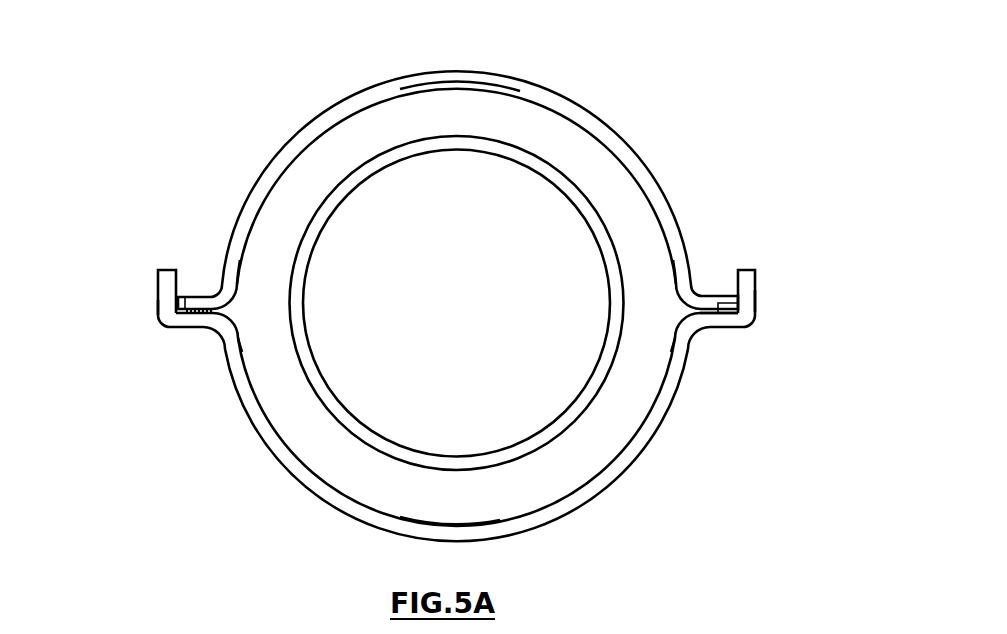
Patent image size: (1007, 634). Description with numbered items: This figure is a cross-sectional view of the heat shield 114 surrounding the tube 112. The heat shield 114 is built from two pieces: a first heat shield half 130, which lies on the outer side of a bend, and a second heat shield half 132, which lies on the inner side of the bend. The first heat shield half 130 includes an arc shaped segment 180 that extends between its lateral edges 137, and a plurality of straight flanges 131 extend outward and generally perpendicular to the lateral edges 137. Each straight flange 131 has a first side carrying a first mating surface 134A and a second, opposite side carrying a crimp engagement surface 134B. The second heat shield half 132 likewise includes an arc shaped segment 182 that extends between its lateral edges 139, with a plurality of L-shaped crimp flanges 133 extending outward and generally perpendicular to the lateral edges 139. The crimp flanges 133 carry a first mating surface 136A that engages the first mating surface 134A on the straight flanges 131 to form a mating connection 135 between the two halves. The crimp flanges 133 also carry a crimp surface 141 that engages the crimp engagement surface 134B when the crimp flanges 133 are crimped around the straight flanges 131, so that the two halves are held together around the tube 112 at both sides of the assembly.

The heat shield 114 is at (451, 274).
The tube 112 is at (298, 387).
The first heat shield half 130 is at (283, 148).
The second heat shield half 132 is at (300, 480).
The arc shaped segment 180 is at (478, 84).
The arc shaped segment 182 is at (425, 521).
The lateral edges 137 is at (238, 289).
The lateral edges 139 is at (238, 337).
The first mating surface 134A is at (205, 330).
The crimp engagement surface 134B is at (709, 293).
The first mating surface 136A is at (190, 293).
The crimp surface 141 is at (734, 272).
The mating connection 135 is at (162, 306).
The crimp flanges 133 is at (745, 300).
The straight flanges 131 is at (720, 306).